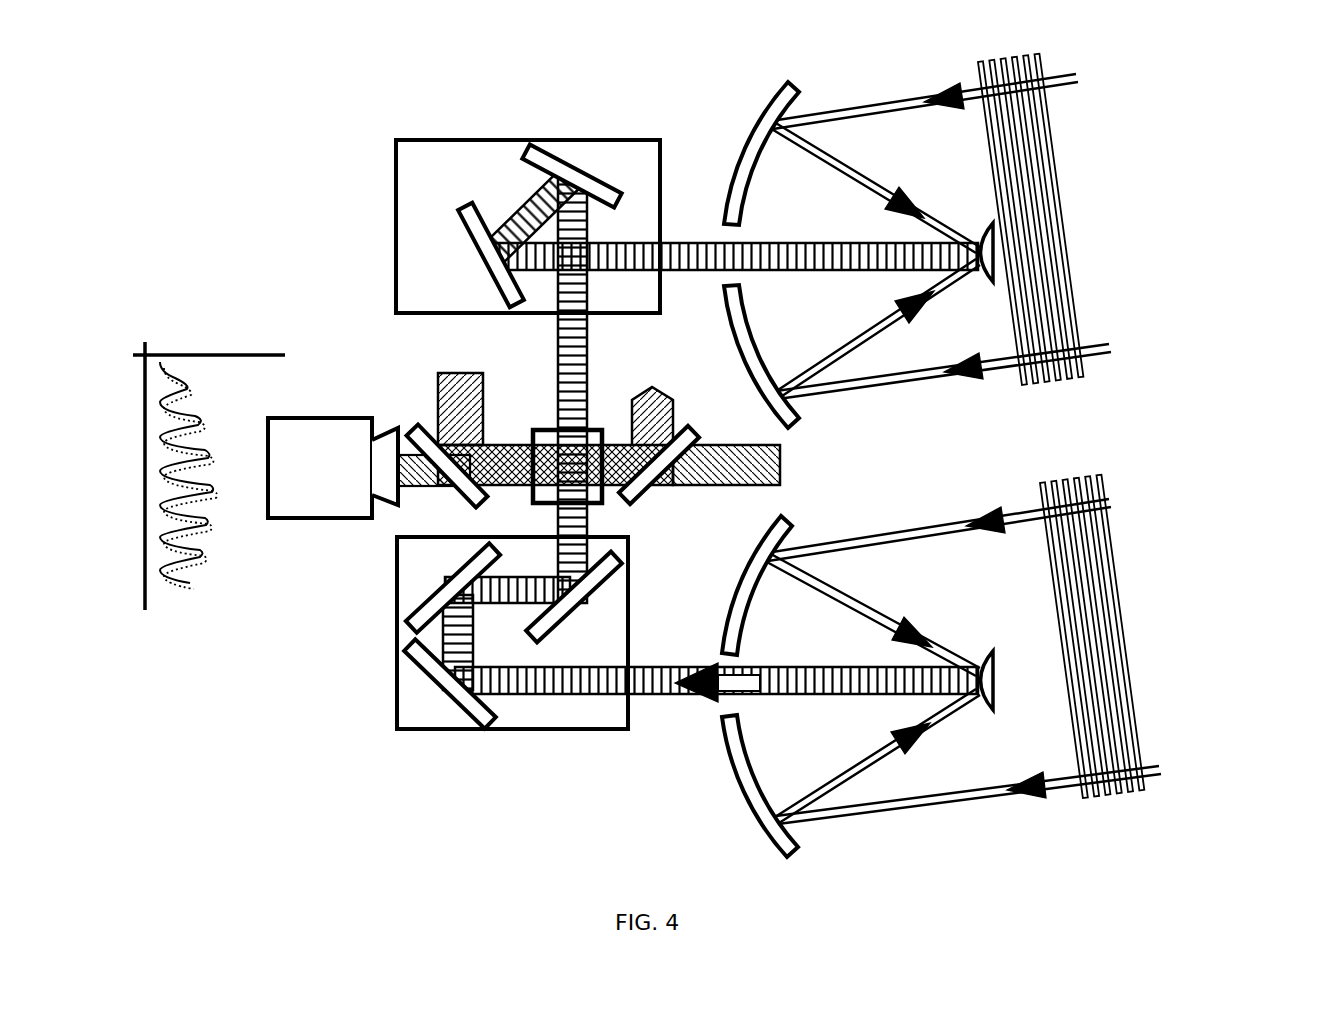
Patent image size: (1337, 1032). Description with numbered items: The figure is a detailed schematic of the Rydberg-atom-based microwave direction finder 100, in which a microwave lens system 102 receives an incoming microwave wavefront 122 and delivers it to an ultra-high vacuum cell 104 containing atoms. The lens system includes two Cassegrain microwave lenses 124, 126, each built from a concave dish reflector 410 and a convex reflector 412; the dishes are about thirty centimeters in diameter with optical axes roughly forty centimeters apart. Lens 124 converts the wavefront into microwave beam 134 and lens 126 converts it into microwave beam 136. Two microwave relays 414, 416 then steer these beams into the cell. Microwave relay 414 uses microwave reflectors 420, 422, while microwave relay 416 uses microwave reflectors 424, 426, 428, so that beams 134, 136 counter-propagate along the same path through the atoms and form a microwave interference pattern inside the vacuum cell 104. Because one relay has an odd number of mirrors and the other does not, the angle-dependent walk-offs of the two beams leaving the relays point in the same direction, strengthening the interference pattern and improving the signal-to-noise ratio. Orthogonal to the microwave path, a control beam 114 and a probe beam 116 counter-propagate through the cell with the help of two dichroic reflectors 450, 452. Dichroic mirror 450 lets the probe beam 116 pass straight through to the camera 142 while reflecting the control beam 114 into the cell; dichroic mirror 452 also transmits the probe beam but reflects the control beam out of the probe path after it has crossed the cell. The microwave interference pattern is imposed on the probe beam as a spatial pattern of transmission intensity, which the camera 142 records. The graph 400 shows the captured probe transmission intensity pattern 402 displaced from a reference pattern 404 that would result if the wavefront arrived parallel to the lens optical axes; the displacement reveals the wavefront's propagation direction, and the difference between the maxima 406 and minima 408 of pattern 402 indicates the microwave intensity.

The microwave direction finder (MDF) 100 is at (808, 40).
The microwave lens system 102 is at (1167, 442).
The ultra-high vacuum (UHV) cell 104 is at (593, 430).
The control beam 114 is at (514, 396).
The probe beam 116 is at (674, 465).
The microwave wavefront 122 is at (1065, 218).
The microwave lens 124 is at (714, 444).
The microwave lens 126 is at (1017, 589).
The microwave beam 134 is at (935, 241).
The microwave beam 136 is at (935, 667).
The camera 142 is at (340, 494).
The graph 400 is at (256, 316).
The captured probe transmission intensity pattern 402 is at (188, 563).
The reference pattern 404 is at (176, 582).
The maxima 406 is at (210, 483).
The minima 408 is at (218, 473).
The concave dish reflector 410 is at (749, 129).
The convex reflector 412 is at (983, 223).
The microwave relay 414 is at (687, 226).
The microwave relay 416 is at (687, 633).
The microwave reflector 420 is at (488, 266).
The microwave reflector 422 is at (574, 163).
The microwave reflector 424 is at (462, 712).
The microwave reflector 426 is at (462, 560).
The microwave reflector 428 is at (586, 602).
The dichroic reflector 450 is at (473, 500).
The dichroic reflector 452 is at (636, 498).